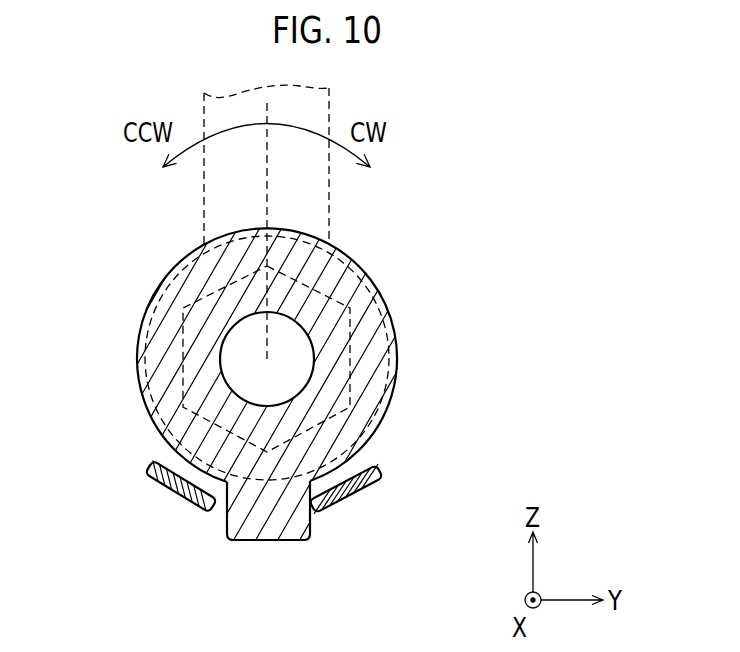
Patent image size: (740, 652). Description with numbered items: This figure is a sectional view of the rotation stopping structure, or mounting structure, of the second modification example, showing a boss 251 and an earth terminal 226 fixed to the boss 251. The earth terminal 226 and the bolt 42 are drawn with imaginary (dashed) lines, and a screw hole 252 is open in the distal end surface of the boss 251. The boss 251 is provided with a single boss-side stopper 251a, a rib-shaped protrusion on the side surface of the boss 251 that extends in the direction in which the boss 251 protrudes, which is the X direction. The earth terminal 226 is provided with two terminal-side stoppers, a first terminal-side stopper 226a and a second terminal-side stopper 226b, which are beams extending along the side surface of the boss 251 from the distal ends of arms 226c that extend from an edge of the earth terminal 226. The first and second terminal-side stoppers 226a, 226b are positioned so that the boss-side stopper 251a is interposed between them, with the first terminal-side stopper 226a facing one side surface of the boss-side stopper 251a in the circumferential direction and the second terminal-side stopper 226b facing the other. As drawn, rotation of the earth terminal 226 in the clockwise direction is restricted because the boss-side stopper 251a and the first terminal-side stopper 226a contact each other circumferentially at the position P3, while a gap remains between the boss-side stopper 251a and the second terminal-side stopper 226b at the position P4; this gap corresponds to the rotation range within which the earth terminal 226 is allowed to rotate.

The earth terminal 226 is at (178, 262).
The first terminal-side stopper 226a is at (370, 487).
The second terminal-side stopper 226b is at (157, 482).
The arm 226c is at (157, 447).
The boss 251 is at (395, 333).
The boss-side stopper 251a is at (260, 542).
The screw hole 252 is at (289, 318).
The bolt 42 is at (360, 400).
The contact position P3 is at (317, 527).
The gap position P4 is at (210, 524).